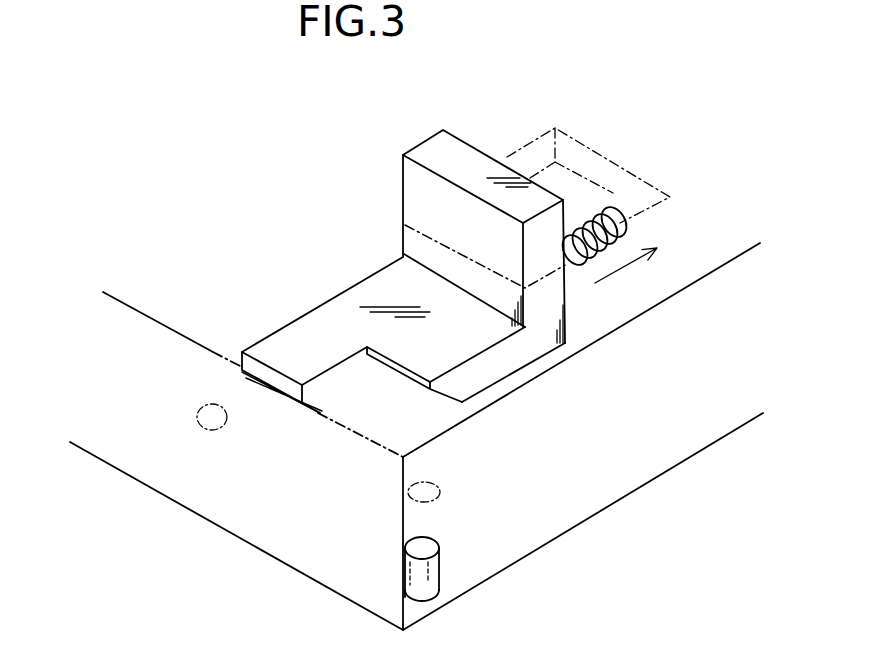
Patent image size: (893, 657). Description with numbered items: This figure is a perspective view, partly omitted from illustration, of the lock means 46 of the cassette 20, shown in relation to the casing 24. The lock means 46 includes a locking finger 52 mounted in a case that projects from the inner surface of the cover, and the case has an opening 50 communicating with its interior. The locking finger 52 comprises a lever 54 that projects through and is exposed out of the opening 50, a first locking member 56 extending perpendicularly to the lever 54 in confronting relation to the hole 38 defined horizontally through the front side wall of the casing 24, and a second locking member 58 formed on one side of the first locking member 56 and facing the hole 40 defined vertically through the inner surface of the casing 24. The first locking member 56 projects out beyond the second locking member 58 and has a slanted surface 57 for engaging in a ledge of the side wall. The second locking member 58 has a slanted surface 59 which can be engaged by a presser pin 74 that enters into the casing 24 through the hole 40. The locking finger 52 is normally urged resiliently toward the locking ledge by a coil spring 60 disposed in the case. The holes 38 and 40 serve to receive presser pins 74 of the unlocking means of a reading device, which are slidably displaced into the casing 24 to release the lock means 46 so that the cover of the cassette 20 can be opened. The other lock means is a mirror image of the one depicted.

The cassette 20 is at (548, 562).
The casing 24 is at (636, 470).
The hole 38 is at (218, 430).
The hole 40 is at (440, 493).
The lock means 46 is at (385, 178).
The opening 50 is at (568, 183).
The locking finger 52 is at (308, 316).
The lever 54 is at (460, 158).
The first locking member 56 is at (250, 363).
The slanted surface 57 is at (307, 412).
The second locking member 58 is at (465, 377).
The slanted surface 59 is at (438, 393).
The coil spring 60 is at (618, 207).
The presser pin 74 is at (423, 580).